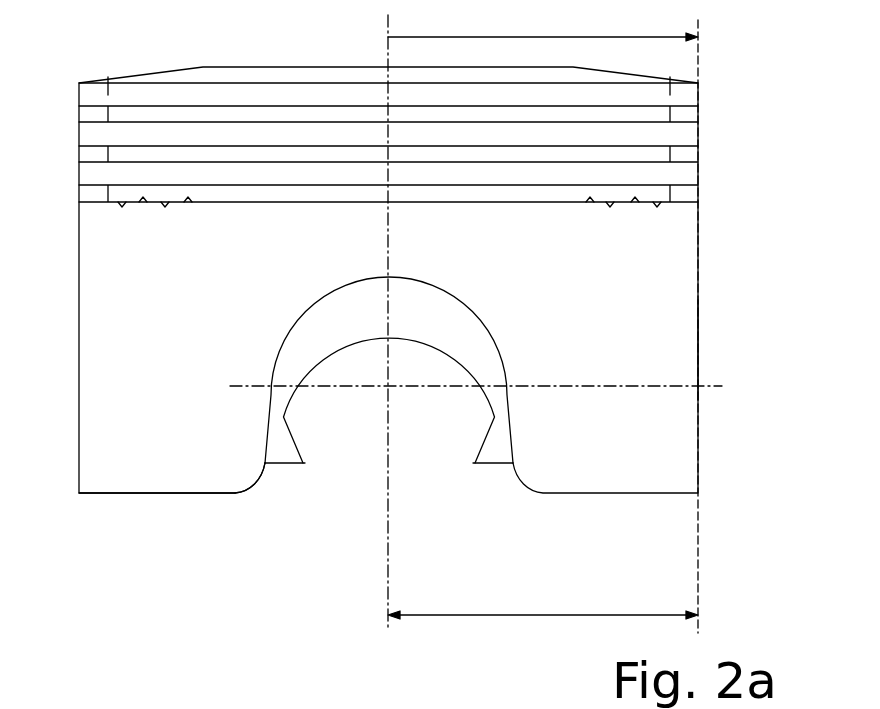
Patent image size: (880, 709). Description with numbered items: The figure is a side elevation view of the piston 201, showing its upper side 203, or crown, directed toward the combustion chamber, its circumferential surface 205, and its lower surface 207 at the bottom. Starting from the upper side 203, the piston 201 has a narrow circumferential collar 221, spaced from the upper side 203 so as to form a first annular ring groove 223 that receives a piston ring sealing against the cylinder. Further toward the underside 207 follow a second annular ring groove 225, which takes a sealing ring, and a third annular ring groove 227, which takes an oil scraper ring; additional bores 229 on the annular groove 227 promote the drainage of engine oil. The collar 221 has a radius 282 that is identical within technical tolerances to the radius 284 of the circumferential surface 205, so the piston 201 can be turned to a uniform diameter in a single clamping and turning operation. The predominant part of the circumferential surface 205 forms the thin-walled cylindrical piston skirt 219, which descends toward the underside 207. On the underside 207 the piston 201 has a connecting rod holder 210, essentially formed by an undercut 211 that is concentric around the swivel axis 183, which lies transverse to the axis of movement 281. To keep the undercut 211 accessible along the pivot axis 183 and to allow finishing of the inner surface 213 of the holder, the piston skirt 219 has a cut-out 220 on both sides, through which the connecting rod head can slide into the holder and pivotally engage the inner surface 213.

The piston 201 is at (770, 100).
The upper side 203 is at (255, 66).
The circumferential surface 205 is at (700, 340).
The lower surface 207 is at (494, 490).
The connecting rod holder 210 is at (293, 467).
The undercut 211 is at (436, 460).
The inner surface 213 is at (287, 417).
The piston skirt 219 is at (160, 493).
The cut-out 220 is at (265, 467).
The circumferential collar 221 is at (700, 89).
The first annular ring groove 223 is at (700, 113).
The second annular ring groove 225 is at (700, 155).
The third annular ring groove 227 is at (700, 192).
The bores 229 is at (657, 207).
The swivel axis 183 is at (389, 386).
The axis of movement 281 is at (389, 550).
The radius of the circumferential collar 282 is at (543, 320).
The radius of the circumferential surface 284 is at (543, 603).